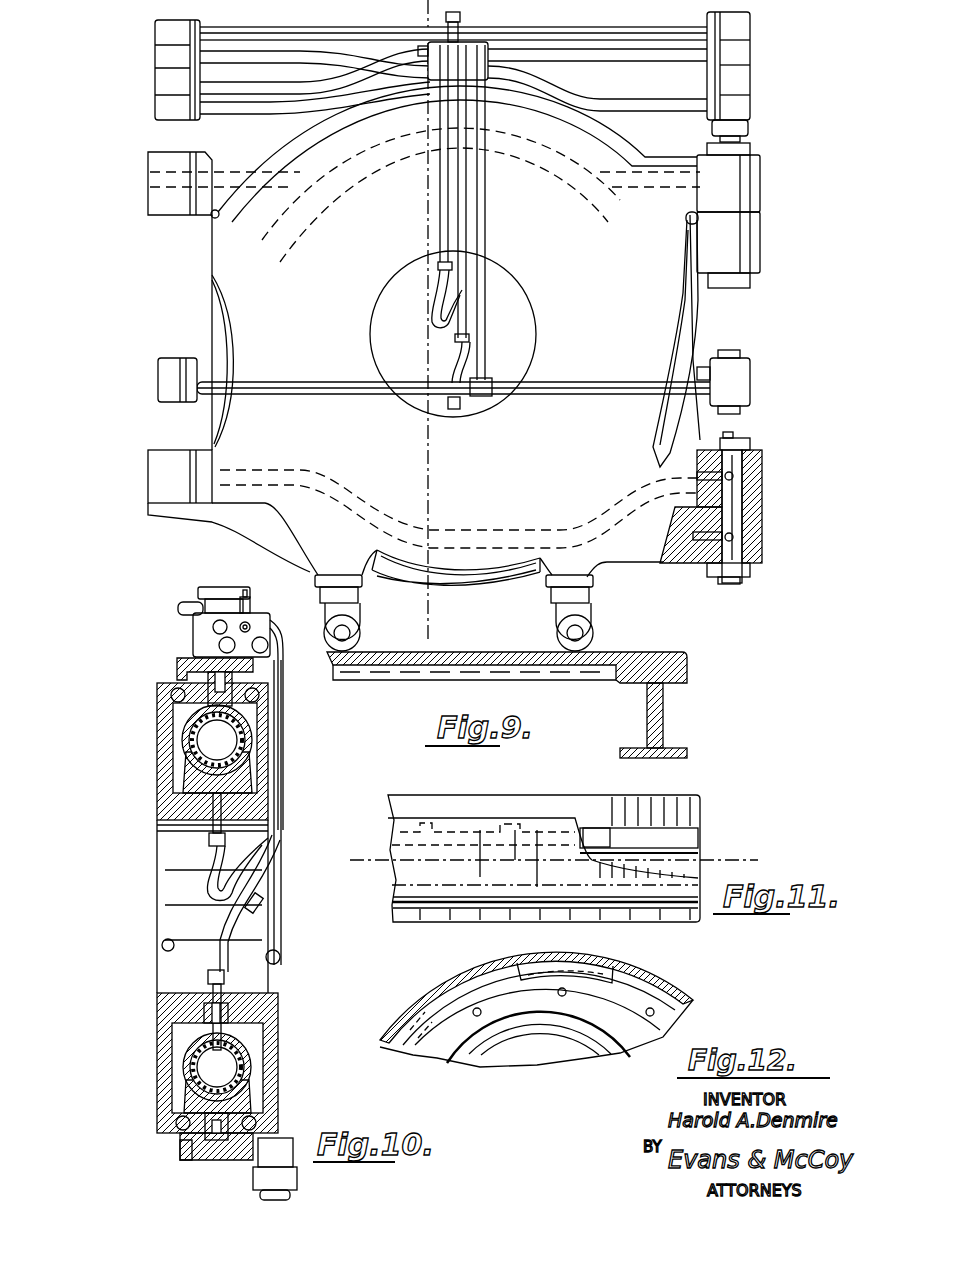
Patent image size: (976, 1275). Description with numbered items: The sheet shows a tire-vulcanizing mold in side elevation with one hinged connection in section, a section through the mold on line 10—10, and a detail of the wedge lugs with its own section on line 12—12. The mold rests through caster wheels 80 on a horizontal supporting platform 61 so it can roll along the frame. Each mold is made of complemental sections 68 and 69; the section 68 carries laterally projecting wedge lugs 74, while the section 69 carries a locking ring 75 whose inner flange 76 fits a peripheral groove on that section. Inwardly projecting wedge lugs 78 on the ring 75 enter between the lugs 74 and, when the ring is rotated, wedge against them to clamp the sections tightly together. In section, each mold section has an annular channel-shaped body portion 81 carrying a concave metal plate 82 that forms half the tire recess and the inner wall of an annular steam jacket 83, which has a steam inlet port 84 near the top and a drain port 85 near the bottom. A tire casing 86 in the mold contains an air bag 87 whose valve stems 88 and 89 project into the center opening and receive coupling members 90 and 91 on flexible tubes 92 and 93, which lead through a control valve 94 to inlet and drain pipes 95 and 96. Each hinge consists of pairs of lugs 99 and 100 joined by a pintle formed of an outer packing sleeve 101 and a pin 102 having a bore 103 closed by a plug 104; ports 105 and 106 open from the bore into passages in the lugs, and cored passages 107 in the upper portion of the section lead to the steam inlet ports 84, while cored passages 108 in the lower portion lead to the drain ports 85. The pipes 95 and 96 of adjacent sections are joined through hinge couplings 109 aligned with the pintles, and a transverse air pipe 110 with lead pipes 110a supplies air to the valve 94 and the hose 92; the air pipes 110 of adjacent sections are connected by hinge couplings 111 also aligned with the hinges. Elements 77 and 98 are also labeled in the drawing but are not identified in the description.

In FIG. 9, the section line 10 is at (428, 8).
In FIG. 10, the section line 12 is at (347, 858).
In FIG. 9, the platform 61 is at (517, 665).
In FIG. 10, the mold section 68 is at (160, 920).
In FIG. 11, the mold section 68 is at (565, 800).
In FIG. 10, the mold section 69 is at (272, 975).
In FIG. 11, the mold section 69 is at (483, 905).
In FIG. 10, the wedge lugs 74 is at (205, 668).
In FIG. 11, the wedge lugs 74 is at (605, 828).
In FIG. 12, the wedge lugs 74 is at (615, 975).
In FIG. 10, the locking ring 75 is at (200, 627).
In FIG. 12, the locking ring 75 is at (664, 985).
In FIG. 10, the inner flange 76 is at (268, 668).
In FIG. 10, the flange 77 is at (268, 686).
In FIG. 10, the wedge lugs 78 is at (177, 668).
In FIG. 11, the wedge lugs 78 is at (540, 822).
In FIG. 12, the wedge lugs 78 is at (572, 975).
In FIG. 9, the caster wheels 80 is at (362, 628).
In FIG. 10, the caster wheels 80 is at (297, 1178).
In FIG. 10, the annular channel shaped body portion 81 is at (157, 762).
In FIG. 10, the concave metal plate 82 is at (188, 775).
In FIG. 10, the annular steam jacket 83 is at (170, 808).
In FIG. 10, the steam inlet port 84 is at (173, 708).
In FIG. 10, the drain port 85 is at (176, 1123).
In FIG. 10, the tire casing 86 is at (192, 735).
In FIG. 10, the air bag 87 is at (192, 742).
In FIG. 10, the valve stem 88 is at (222, 815).
In FIG. 10, the valve stem 89 is at (208, 1000).
In FIG. 10, the coupling member 90 is at (209, 840).
In FIG. 10, the coupling member 91 is at (282, 985).
In FIG. 9, the flexible tube 92 is at (436, 325).
In FIG. 10, the flexible tube 92 is at (208, 885).
In FIG. 9, the flexible tube 93 is at (470, 336).
In FIG. 10, the flexible tube 93 is at (278, 890).
In FIG. 10, the control valve 94 is at (250, 600).
In FIG. 9, the inlet pipe 95 is at (640, 50).
In FIG. 10, the inlet pipe 95 is at (205, 590).
In FIG. 9, the drain pipe 96 is at (712, 126).
In FIG. 10, the drain pipe 96 is at (283, 640).
In FIG. 10, the coupling 98 is at (160, 972).
In FIG. 9, the hinge lug 99 is at (760, 244).
In FIG. 9, the hinge lug 100 is at (760, 190).
In FIG. 9, the outer packing sleeve 101 is at (762, 504).
In FIG. 9, the pin 102 is at (732, 584).
In FIG. 9, the bore 103 is at (762, 470).
In FIG. 9, the plug 104 is at (740, 438).
In FIG. 9, the ports 105 is at (752, 450).
In FIG. 9, the ports 106 is at (762, 552).
In FIG. 9, the cored passages 107 is at (245, 175).
In FIG. 10, the cored passages 107 is at (171, 693).
In FIG. 10, the cored passages 108 is at (205, 1135).
In FIG. 9, the hinge couplings 109 is at (155, 62).
In FIG. 10, the hinge couplings 109 is at (279, 1120).
In FIG. 9, the air pipe 110 is at (207, 370).
In FIG. 10, the air pipe 110 is at (162, 946).
In FIG. 9, the lead pipes 110a is at (480, 235).
In FIG. 10, the lead pipes 110a is at (282, 925).
In FIG. 9, the hinge couplings 111 is at (158, 376).